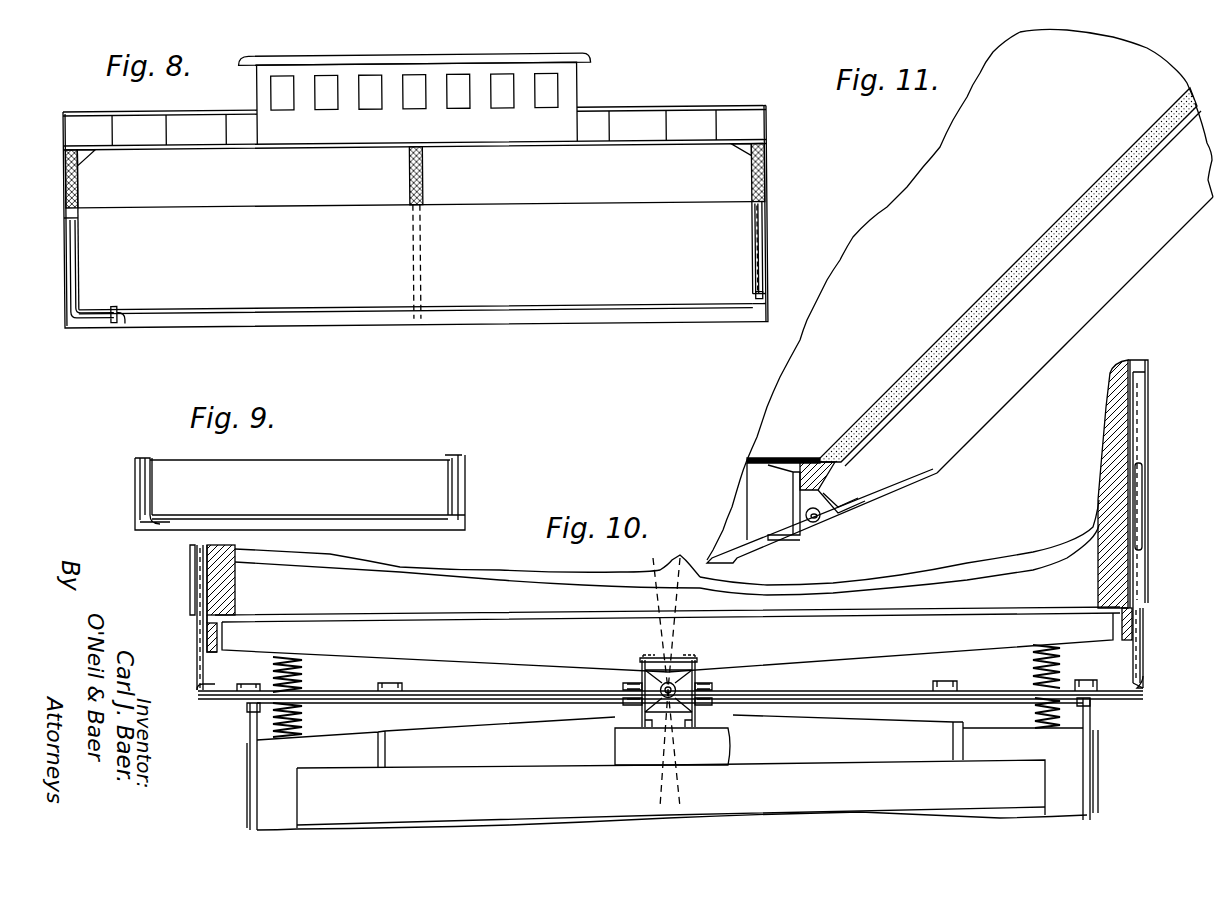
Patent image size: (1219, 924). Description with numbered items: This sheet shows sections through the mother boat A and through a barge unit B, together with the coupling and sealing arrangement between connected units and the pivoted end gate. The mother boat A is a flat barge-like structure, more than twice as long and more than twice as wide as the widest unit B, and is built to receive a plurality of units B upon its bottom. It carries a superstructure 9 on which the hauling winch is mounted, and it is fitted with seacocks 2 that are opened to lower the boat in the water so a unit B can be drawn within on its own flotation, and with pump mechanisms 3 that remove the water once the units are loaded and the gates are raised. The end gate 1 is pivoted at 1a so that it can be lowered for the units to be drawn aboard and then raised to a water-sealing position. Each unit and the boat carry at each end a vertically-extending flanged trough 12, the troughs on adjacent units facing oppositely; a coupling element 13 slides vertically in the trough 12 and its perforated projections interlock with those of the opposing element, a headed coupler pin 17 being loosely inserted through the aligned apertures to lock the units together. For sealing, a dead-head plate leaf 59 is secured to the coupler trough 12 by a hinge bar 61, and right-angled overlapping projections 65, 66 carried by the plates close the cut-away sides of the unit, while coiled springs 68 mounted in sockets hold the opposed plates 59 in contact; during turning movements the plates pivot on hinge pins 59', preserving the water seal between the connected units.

In FIG. 11, the end gate 1 is at (992, 301).
In FIG. 11, the pivot of end gate 1a is at (807, 535).
In FIG. 8, the seacock 2 is at (766, 266).
In FIG. 9, the seacock 2 is at (458, 490).
In FIG. 9, the pump mechanism 3 is at (152, 492).
In FIG. 8, the superstructure 9 is at (648, 116).
In FIG. 8, the mother boat A is at (768, 171).
In FIG. 9, the mother boat A is at (352, 470).
In FIG. 11, the unit B is at (1117, 442).
In FIG. 10, the unit B is at (1060, 778).
In FIG. 10, the flanged trough 12 is at (700, 672).
In FIG. 10, the coupling element 13 is at (697, 673).
In FIG. 10, the coupler pin 17 is at (670, 682).
In FIG. 10, the leaf 59 is at (670, 692).
In FIG. 10, the hinge pin 59' is at (671, 701).
In FIG. 10, the hinge bar 61 is at (638, 687).
In FIG. 11, the overlapping projection 65 is at (1147, 574).
In FIG. 10, the overlapping projection 65 is at (250, 728).
In FIG. 11, the overlapping projection 66 is at (1145, 506).
In FIG. 10, the coiled spring 68 is at (303, 682).